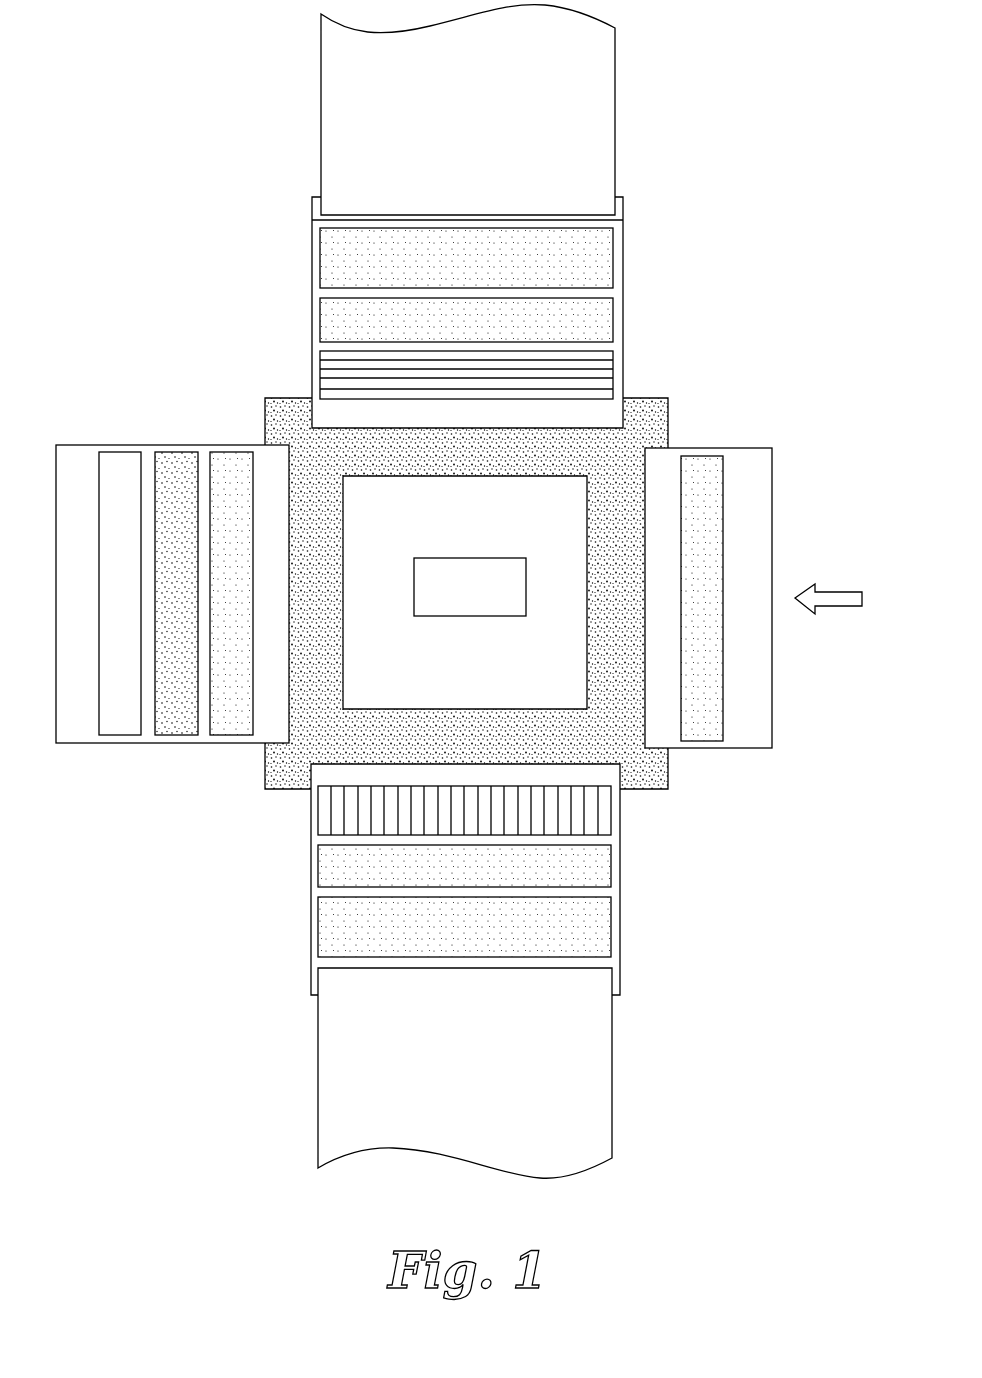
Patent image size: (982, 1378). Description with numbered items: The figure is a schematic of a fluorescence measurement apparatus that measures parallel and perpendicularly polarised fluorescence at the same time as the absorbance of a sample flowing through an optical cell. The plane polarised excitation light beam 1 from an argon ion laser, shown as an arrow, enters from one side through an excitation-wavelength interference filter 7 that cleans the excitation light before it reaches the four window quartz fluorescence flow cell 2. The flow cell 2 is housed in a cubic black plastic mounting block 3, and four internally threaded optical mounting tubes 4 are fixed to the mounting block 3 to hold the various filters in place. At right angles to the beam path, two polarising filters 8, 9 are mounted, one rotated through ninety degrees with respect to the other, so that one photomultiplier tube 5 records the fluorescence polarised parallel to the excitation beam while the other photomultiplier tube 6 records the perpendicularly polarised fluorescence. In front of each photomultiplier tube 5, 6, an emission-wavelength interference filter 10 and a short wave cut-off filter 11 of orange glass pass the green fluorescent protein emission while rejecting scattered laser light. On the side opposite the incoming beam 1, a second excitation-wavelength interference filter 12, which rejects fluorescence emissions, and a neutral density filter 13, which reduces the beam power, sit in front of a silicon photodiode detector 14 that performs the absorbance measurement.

The light beam 1 is at (830, 591).
The fluorescence flow cell 2 is at (469, 574).
The mounting block 3 is at (263, 415).
The optical mounting tubes 4 is at (625, 226).
The photomultiplier tube 5 is at (477, 1073).
The photomultiplier tube 6 is at (477, 130).
The 488 nm interference filter 7 is at (697, 455).
The polarising filter 8 is at (613, 811).
The polarising filter 9 is at (318, 375).
The 515 nm interference filter 10 is at (318, 323).
The 515 nm short wave cut-off filter 11 is at (318, 257).
The second 488 nm interference filter 12 is at (230, 739).
The neutral density filter 13 is at (174, 739).
The silicon photodiode detector 14 is at (107, 739).